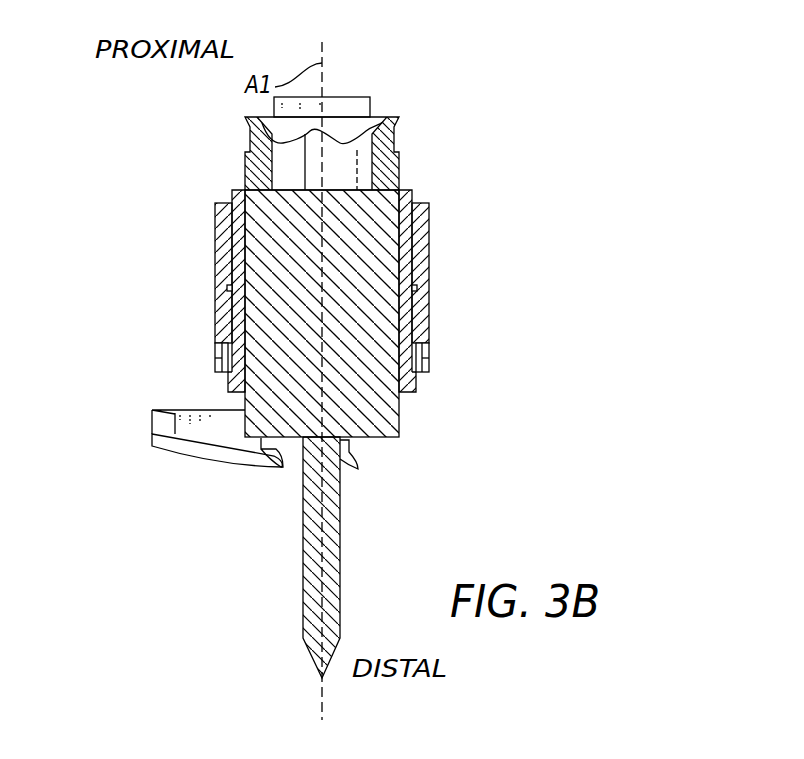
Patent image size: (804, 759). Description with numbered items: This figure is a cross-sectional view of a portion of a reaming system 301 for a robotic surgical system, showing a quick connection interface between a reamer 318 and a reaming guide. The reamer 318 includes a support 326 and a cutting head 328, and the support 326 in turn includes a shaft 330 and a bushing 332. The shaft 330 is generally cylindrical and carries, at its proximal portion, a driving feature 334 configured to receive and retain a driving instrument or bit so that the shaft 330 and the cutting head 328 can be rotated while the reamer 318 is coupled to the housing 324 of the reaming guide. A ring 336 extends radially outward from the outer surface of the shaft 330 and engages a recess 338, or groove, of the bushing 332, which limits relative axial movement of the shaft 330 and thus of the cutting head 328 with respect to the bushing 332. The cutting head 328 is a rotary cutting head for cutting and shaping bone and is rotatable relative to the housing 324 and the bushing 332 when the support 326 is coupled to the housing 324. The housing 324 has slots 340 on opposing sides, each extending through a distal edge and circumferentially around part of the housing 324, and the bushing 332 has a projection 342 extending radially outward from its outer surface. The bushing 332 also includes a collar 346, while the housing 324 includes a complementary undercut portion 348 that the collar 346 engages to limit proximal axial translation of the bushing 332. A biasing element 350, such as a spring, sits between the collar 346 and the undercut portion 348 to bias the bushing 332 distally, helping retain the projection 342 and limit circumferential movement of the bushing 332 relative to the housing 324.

The reaming system 301 is at (443, 75).
The reamer 318 is at (387, 467).
The housing 324 is at (225, 235).
The support 326 is at (410, 415).
The cutting head 328 is at (315, 552).
The shaft 330 is at (293, 405).
The bushing 332 is at (233, 298).
The driving feature 334 is at (375, 118).
The ring 336 is at (240, 378).
The recess 338 is at (400, 375).
The slots 340 is at (223, 343).
The projection 342 is at (217, 358).
The collar 346 is at (410, 298).
The undercut portion 348 is at (420, 225).
The biasing element 350 is at (417, 280).